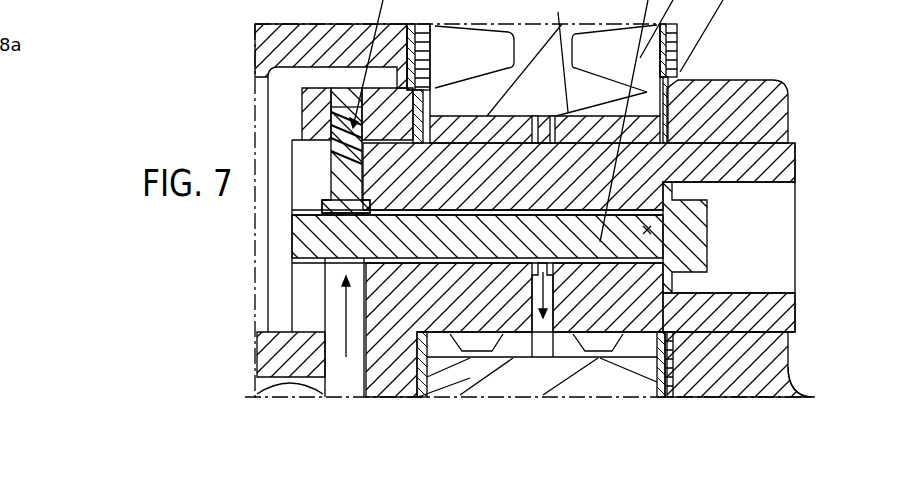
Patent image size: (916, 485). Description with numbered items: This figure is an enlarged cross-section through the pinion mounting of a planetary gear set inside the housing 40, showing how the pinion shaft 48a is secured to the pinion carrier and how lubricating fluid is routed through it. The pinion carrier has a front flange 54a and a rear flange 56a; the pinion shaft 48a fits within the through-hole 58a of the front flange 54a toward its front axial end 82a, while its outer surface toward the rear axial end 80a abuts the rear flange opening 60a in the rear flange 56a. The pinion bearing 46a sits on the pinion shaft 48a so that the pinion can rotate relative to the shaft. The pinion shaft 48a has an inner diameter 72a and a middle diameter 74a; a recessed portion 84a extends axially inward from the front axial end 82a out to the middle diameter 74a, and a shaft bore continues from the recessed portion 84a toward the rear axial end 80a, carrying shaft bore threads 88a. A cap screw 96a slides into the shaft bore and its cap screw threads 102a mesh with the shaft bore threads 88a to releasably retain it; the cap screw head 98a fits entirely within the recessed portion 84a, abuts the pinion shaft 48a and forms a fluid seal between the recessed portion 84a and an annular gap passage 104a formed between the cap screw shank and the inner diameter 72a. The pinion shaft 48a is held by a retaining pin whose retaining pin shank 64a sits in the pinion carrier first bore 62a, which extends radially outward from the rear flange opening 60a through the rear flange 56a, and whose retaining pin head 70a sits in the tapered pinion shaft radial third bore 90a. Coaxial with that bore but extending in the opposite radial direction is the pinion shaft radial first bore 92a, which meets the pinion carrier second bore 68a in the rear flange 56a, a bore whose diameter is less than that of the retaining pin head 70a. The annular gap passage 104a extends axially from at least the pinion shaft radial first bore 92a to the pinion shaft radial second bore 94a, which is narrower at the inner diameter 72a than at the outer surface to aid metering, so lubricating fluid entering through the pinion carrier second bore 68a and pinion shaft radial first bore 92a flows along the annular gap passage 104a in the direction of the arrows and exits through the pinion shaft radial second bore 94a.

The housing 40 is at (268, 41).
The front flange 54a is at (760, 422).
The rear flange 56a is at (312, 115).
The rear flange opening 60a is at (335, 146).
The pinion carrier first bore 62a is at (338, 100).
The retaining pin shank 64a is at (335, 155).
The pinion shaft radial third bore 90a is at (330, 172).
The inner diameter 72a is at (475, 318).
The cap screw 96a is at (646, 230).
The middle diameter 74a is at (790, 142).
The cap screw head 98a is at (690, 244).
The recessed portion 84a is at (762, 203).
The front axial end 82a is at (793, 310).
The pinion shaft 48a is at (752, 305).
The through-hole 58a is at (788, 350).
The retaining pin head 70a is at (347, 207).
The shaft bore threads 88a is at (322, 222).
The cap screw threads 102a is at (322, 222).
The pinion shaft radial first bore 92a is at (318, 268).
The rear axial end 80a is at (325, 292).
The pinion carrier second bore 68a is at (357, 358).
The pinion shaft radial second bore 94a is at (543, 335).
The annular gap passage 104a is at (513, 262).
The pinion bearing 46a is at (603, 370).